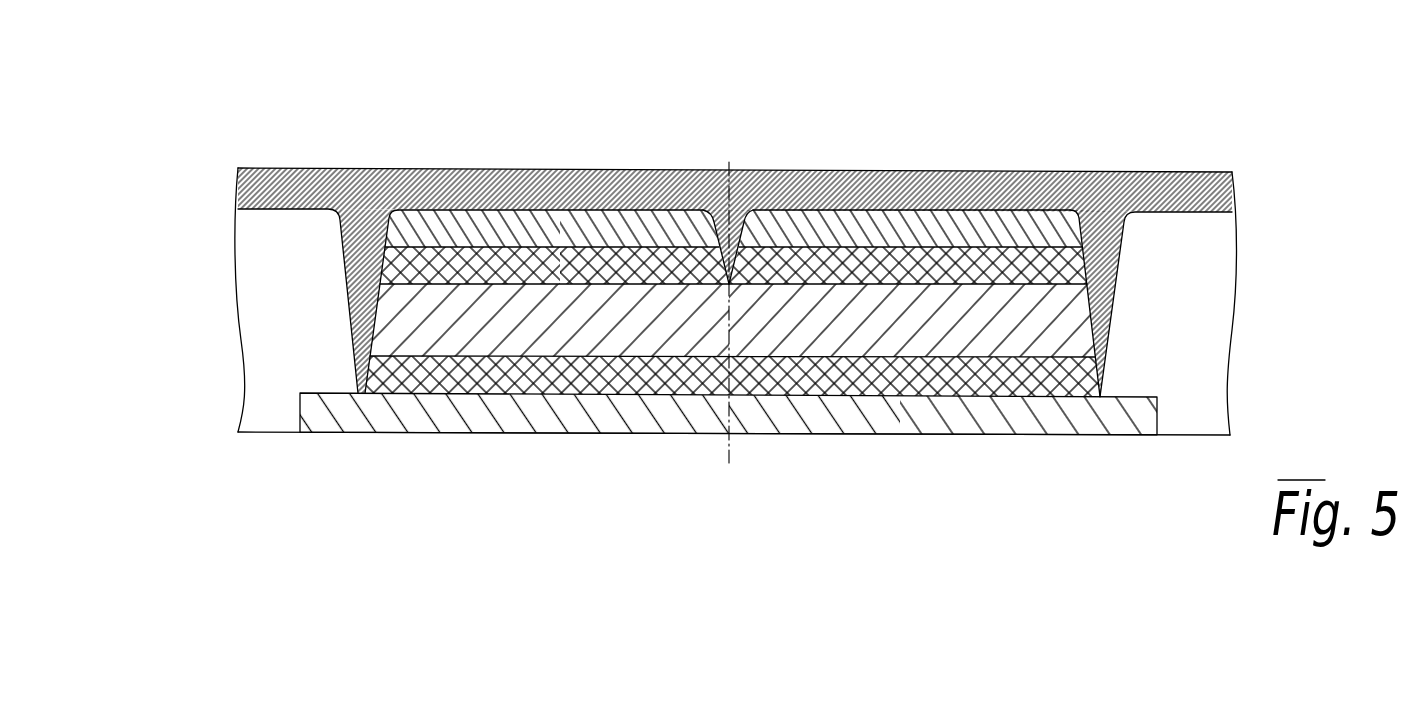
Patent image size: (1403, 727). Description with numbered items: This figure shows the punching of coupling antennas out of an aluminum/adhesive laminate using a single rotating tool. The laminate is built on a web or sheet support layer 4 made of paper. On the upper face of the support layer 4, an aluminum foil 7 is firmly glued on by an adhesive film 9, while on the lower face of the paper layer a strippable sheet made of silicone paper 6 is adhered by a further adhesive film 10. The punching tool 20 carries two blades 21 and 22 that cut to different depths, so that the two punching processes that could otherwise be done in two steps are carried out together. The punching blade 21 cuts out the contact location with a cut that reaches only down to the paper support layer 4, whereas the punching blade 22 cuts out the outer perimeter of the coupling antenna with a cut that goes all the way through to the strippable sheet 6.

The support layer 4 is at (568, 323).
The strippable sheet 6 is at (863, 420).
The aluminum foil 7 is at (1002, 230).
The adhesive film 9 is at (492, 268).
The adhesive film 10 is at (665, 380).
The punching tool 20 is at (877, 183).
The punching blade 21 is at (737, 217).
The punching blade 22 is at (350, 253).